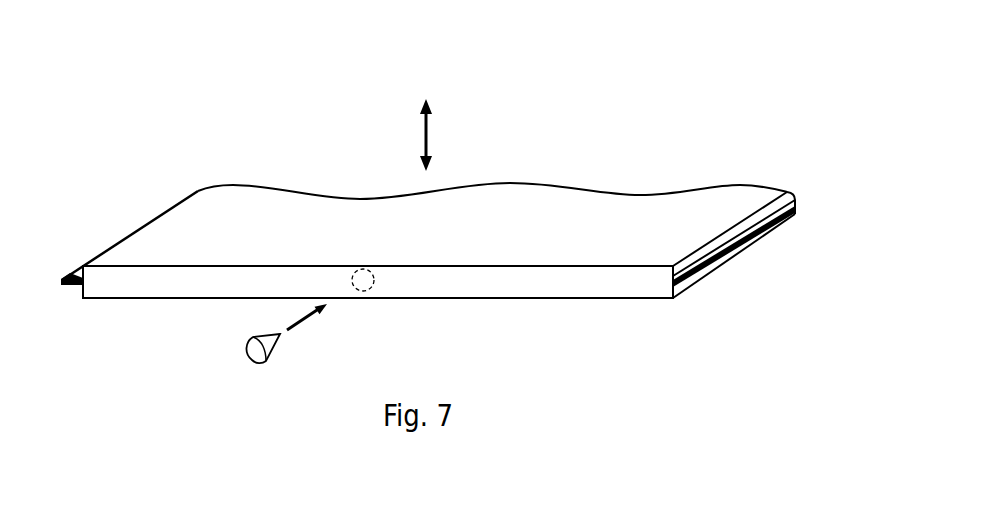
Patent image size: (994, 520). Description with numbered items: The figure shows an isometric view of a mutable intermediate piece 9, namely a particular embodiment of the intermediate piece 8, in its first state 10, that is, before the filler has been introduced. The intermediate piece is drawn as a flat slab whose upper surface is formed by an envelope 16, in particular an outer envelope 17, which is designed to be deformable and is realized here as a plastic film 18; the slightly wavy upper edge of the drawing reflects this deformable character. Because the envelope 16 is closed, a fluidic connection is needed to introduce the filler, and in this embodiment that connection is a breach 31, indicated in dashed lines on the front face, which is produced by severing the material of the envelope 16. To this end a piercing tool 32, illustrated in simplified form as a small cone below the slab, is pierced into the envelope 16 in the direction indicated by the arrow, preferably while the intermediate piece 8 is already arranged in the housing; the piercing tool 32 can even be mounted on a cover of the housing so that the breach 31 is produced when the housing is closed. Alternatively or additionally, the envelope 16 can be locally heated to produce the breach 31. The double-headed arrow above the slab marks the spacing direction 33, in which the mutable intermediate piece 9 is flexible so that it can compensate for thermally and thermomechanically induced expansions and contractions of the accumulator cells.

The intermediate piece 8 is at (444, 163).
The mutable intermediate piece 9 is at (444, 163).
The first state 10 is at (444, 163).
The envelope 16 is at (492, 162).
The outer envelope 17 is at (492, 162).
The plastic film 18 is at (516, 200).
The breach 31 is at (362, 292).
The piercing tool 32 is at (273, 350).
The spacing direction 33 is at (422, 134).